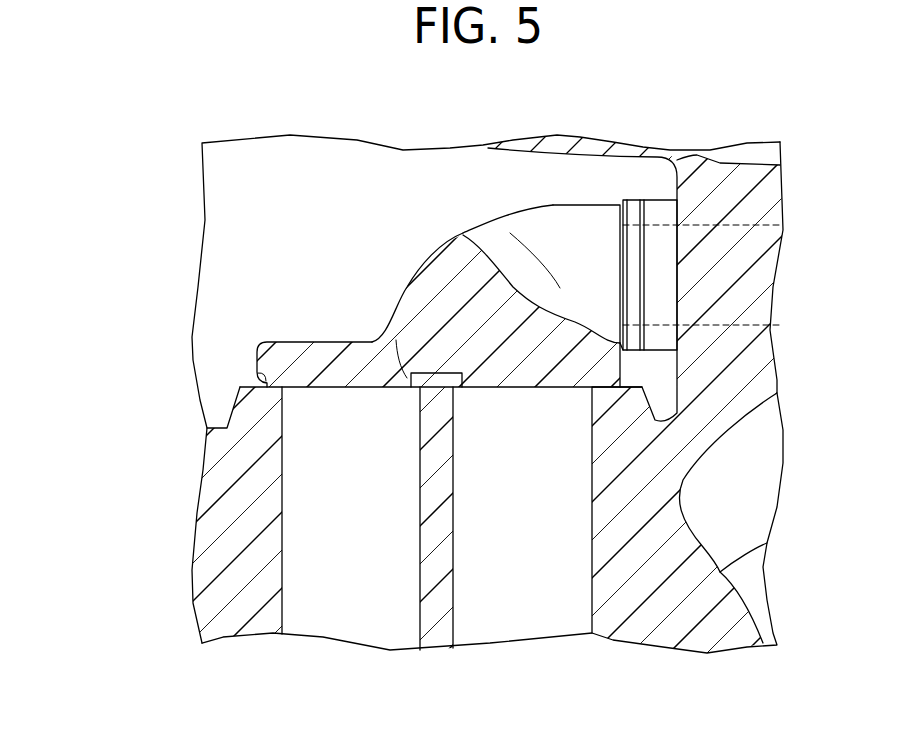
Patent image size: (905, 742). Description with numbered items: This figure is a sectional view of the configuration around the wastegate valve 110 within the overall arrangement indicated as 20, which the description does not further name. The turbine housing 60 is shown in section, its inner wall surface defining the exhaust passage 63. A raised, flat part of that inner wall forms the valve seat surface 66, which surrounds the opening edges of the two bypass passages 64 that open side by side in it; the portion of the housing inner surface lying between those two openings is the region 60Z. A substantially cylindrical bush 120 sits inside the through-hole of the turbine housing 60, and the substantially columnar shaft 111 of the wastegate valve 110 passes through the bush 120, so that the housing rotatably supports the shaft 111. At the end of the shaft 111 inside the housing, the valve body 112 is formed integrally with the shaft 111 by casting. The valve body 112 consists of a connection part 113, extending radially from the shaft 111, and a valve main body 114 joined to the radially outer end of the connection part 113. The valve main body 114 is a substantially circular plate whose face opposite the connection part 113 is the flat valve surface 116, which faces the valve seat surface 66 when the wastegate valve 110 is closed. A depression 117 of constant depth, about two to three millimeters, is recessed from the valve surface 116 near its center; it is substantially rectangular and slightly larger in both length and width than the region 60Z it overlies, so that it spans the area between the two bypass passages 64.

The lens unit 20 is at (172, 158).
The turbine housing 60 is at (761, 348).
The region 60Z is at (438, 380).
The exhaust passage 63 is at (313, 170).
The bypass passage 64 is at (468, 633).
The valve seat surface 66 is at (256, 372).
The wastegate valve 110 is at (573, 204).
The shaft 111 is at (750, 224).
The valve body 112 is at (481, 222).
The connection part 113 is at (433, 245).
The valve main body 114 is at (283, 342).
The valve surface 116 is at (238, 401).
The depression 117 is at (398, 368).
The bush 120 is at (660, 200).